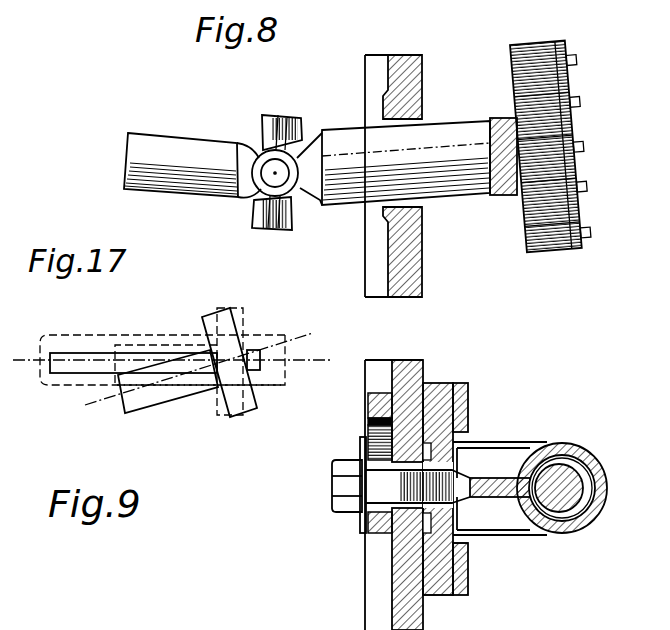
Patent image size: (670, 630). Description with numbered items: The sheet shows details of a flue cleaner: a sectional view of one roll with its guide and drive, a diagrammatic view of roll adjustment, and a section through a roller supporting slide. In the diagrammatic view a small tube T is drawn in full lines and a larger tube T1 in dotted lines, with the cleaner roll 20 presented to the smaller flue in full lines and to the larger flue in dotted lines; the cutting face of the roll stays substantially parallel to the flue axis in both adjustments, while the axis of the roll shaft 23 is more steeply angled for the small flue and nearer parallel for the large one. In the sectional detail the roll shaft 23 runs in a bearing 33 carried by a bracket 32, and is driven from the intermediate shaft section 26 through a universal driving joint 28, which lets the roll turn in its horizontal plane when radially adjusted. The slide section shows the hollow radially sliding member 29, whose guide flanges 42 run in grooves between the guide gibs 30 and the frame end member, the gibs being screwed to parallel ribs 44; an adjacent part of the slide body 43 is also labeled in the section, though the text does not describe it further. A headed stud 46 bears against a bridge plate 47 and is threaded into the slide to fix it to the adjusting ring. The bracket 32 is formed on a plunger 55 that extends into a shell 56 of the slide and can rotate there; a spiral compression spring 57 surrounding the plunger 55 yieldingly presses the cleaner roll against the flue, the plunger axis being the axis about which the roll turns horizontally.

In FIG. 8, the cleaner roll 20 is at (570, 258).
In FIG. 17, the cleaner roll 20 is at (207, 316).
In FIG. 8, the roll shaft 23 is at (470, 167).
In FIG. 8, the intermediate shaft section 26 is at (192, 147).
In FIG. 8, the universal driving joint 28 is at (282, 157).
In FIG. 9, the radially sliding member 29 is at (473, 441).
In FIG. 9, the guide gib 30 is at (469, 578).
In FIG. 8, the bracket 32 is at (513, 172).
In FIG. 8, the bearing 33 is at (450, 131).
In FIG. 9, the guide flange 42 is at (468, 405).
In FIG. 9, the body 43 is at (469, 418).
In FIG. 9, the parallel rib 44 is at (432, 594).
In FIG. 9, the stud 46 is at (378, 486).
In FIG. 9, the bridge plate 47 is at (364, 451).
In FIG. 9, the plunger 55 is at (585, 487).
In FIG. 9, the shell 56 is at (582, 452).
In FIG. 9, the spiral compression spring 57 is at (578, 522).
In FIG. 17, the tube of small diameter T is at (128, 358).
In FIG. 17, the tube of larger diameter T1 is at (65, 343).